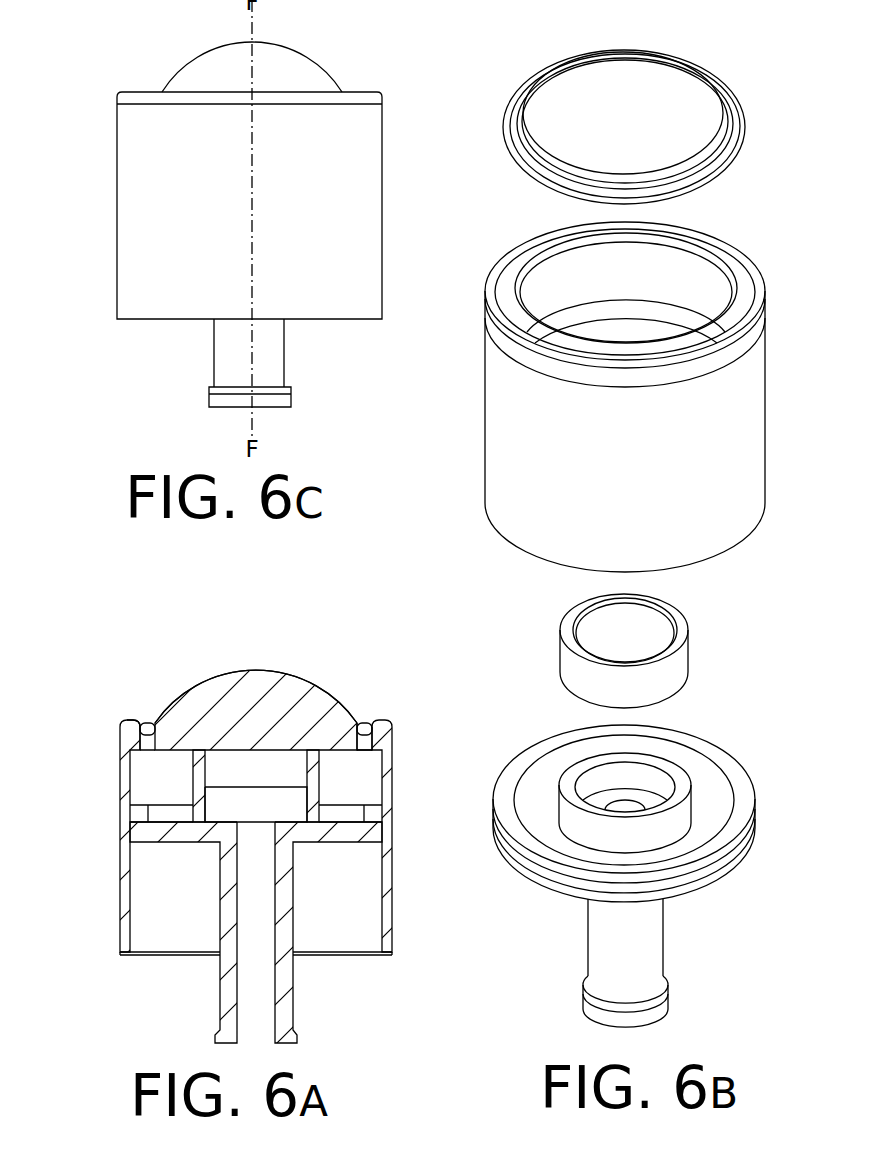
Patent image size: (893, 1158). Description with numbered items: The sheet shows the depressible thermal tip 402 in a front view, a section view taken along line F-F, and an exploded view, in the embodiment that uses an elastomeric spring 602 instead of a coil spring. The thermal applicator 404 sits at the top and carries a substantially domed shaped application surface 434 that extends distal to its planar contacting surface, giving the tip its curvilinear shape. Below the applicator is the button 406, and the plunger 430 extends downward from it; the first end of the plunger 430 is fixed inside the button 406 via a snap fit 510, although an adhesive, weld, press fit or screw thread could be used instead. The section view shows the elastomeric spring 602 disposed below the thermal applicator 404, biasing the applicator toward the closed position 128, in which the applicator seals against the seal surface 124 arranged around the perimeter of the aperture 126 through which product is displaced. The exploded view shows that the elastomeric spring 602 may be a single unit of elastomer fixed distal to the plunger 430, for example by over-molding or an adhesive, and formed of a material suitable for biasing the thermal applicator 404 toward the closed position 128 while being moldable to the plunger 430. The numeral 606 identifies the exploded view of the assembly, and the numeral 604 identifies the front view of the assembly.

In FIG. 6C, the depressible thermal tip 402 is at (123, 28).
In FIG. 6C, the thermal applicator 404 is at (170, 82).
In FIG. 6B, the thermal applicator 404 is at (525, 88).
In FIG. 6A, the thermal applicator 404 is at (167, 717).
In FIG. 6C, the button 406 is at (117, 205).
In FIG. 6B, the button 406 is at (484, 375).
In FIG. 6C, the plunger 430 is at (212, 389).
In FIG. 6B, the plunger 430 is at (585, 945).
In FIG. 6A, the plunger 430 is at (220, 1030).
In FIG. 6B, the exploded button assembly 606 is at (482, 33).
In FIG. 6B, the aperture 126 is at (587, 292).
In FIG. 6A, the aperture 126 is at (358, 717).
In FIG. 6B, the elastomeric spring 602 is at (560, 647).
In FIG. 6A, the elastomeric spring 602 is at (193, 782).
In FIG. 6A, the cross-sectional button assembly 604 is at (158, 672).
In FIG. 6A, the domed shaped application surface 434 is at (267, 670).
In FIG. 6A, the closed position 128 is at (140, 748).
In FIG. 6A, the snap fit 510 is at (130, 820).
In FIG. 6A, the seal surface 124 is at (364, 732).